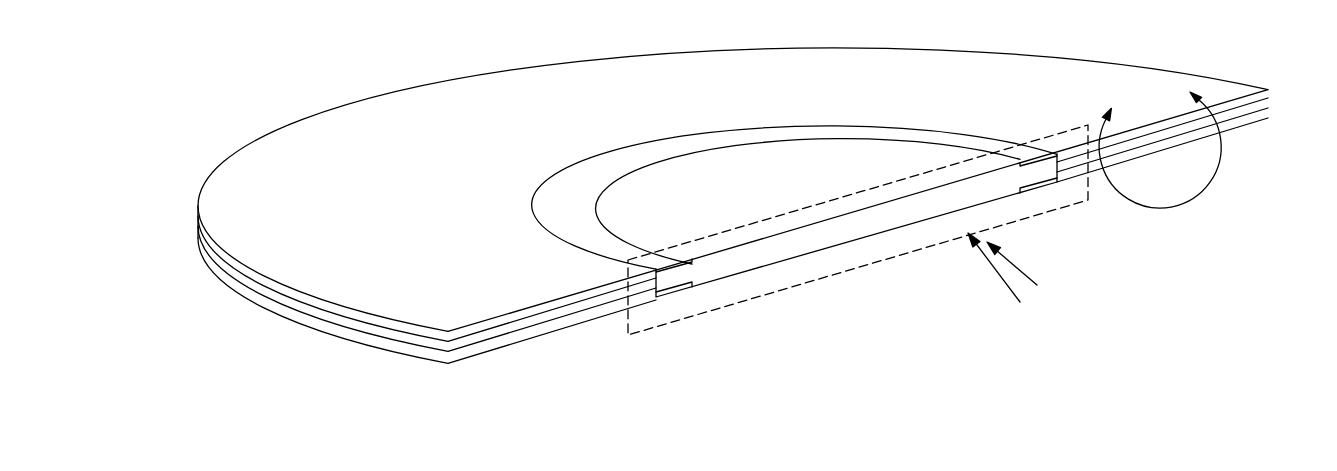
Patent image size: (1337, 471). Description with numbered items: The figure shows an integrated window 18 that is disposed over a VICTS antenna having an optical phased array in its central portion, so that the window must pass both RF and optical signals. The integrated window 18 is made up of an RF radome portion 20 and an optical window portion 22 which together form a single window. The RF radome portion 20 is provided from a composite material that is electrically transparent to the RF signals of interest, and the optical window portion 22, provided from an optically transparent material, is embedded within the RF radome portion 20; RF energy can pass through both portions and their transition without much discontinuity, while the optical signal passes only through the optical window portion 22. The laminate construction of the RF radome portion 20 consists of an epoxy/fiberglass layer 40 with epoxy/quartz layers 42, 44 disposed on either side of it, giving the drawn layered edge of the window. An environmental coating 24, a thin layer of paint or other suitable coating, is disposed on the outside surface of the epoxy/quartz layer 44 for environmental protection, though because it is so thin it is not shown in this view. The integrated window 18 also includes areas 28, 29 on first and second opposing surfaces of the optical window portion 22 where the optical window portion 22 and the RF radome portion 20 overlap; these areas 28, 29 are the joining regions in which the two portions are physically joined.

The integrated window 18 is at (1083, 42).
The RF radome portion 20 is at (303, 118).
The optical window portion 22 is at (827, 250).
The environmental coating 24 is at (412, 239).
The joining region 28 is at (566, 190).
The joining region 29 is at (683, 298).
The epoxy/fiberglass layer 40 is at (1272, 107).
The epoxy/quartz layer 42 is at (1270, 120).
The epoxy/quartz layer 44 is at (1268, 94).